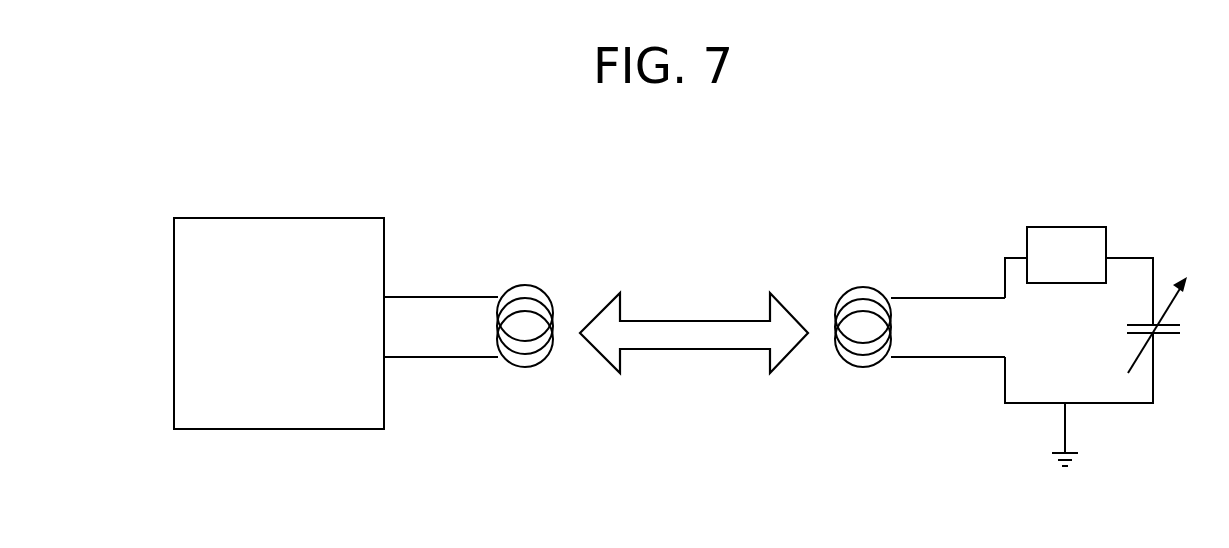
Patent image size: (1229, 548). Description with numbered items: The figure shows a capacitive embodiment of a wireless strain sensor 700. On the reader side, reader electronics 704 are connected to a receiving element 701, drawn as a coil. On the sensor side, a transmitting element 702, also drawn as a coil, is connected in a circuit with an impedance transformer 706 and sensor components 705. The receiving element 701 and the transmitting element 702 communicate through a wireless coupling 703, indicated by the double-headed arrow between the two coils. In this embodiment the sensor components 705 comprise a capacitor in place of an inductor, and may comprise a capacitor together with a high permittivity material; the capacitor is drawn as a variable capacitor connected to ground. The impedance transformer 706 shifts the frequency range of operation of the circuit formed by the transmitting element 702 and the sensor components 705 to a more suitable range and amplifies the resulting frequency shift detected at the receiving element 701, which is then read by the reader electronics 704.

The wireless strain sensor 700 is at (332, 167).
The receiving element 701 is at (517, 283).
The transmitting element 702 is at (867, 286).
The wireless coupling 703 is at (737, 350).
The reader electronics 704 is at (237, 430).
The sensor components 705 is at (1110, 327).
The impedance transformer 706 is at (1078, 227).